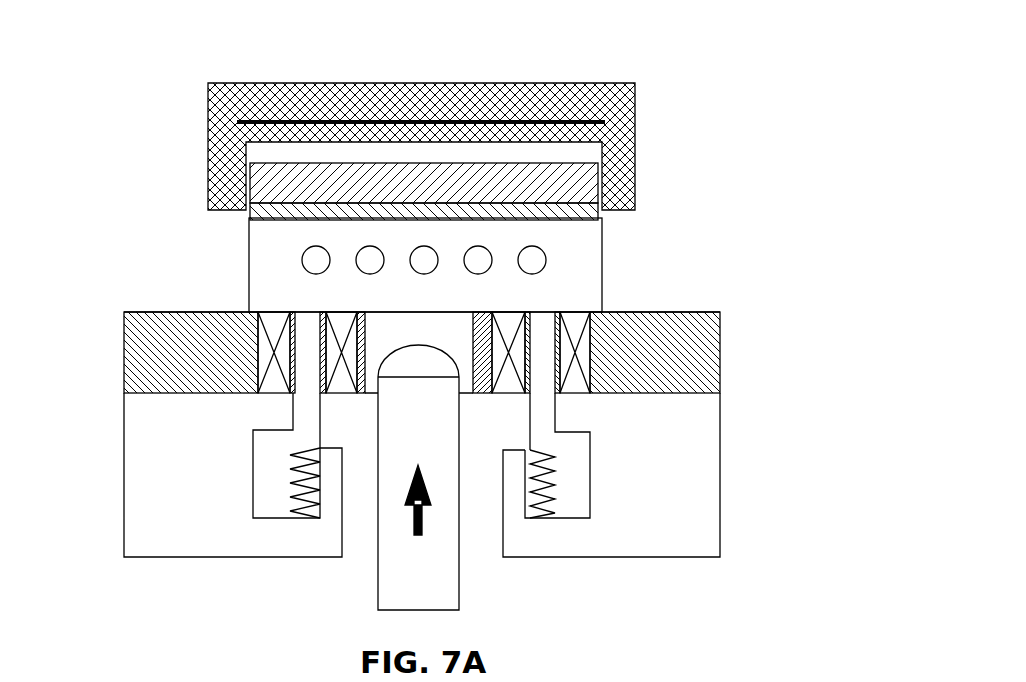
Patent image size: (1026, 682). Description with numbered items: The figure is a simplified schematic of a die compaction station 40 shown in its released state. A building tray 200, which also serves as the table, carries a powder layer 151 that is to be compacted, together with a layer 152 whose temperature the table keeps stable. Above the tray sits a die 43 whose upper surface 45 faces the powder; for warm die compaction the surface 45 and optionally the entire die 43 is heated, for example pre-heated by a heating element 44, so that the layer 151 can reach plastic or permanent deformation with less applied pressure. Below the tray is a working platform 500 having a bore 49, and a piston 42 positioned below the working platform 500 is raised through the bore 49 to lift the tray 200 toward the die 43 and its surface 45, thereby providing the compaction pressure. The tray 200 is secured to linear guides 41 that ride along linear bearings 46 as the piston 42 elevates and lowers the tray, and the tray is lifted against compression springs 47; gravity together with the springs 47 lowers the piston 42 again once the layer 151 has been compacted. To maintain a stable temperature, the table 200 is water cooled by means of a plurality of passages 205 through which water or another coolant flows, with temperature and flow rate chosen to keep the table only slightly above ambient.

The compacting station 40 is at (808, 52).
The die 43 is at (417, 109).
The heating element 44 is at (582, 95).
The upper surface 45 is at (500, 135).
The powder layer 151 is at (600, 180).
The layer 152 is at (612, 212).
The building tray 200 is at (415, 265).
The passages 205 is at (302, 262).
The working platform 500 is at (426, 434).
The linear bearings 46 is at (590, 377).
The linear guides 41 is at (549, 393).
The bore 49 is at (462, 393).
The piston 42 is at (461, 560).
The compression springs 47 is at (292, 465).